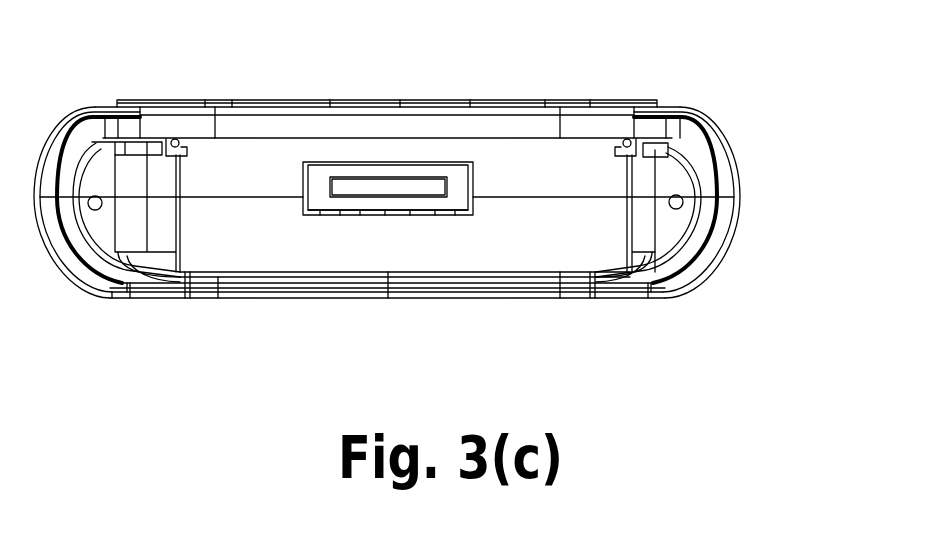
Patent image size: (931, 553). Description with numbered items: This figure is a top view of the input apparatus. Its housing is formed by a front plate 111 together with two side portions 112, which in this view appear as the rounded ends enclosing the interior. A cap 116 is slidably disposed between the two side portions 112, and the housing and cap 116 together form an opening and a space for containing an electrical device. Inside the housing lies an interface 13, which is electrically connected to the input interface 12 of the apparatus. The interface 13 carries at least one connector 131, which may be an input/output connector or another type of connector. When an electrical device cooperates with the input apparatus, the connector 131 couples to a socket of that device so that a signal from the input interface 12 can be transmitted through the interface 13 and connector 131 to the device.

The input interface 12 is at (345, 105).
The interface 13 is at (340, 180).
The connector 131 is at (417, 183).
The front plate 111 is at (528, 108).
The side portions 112 is at (720, 198).
The cap 116 is at (340, 296).